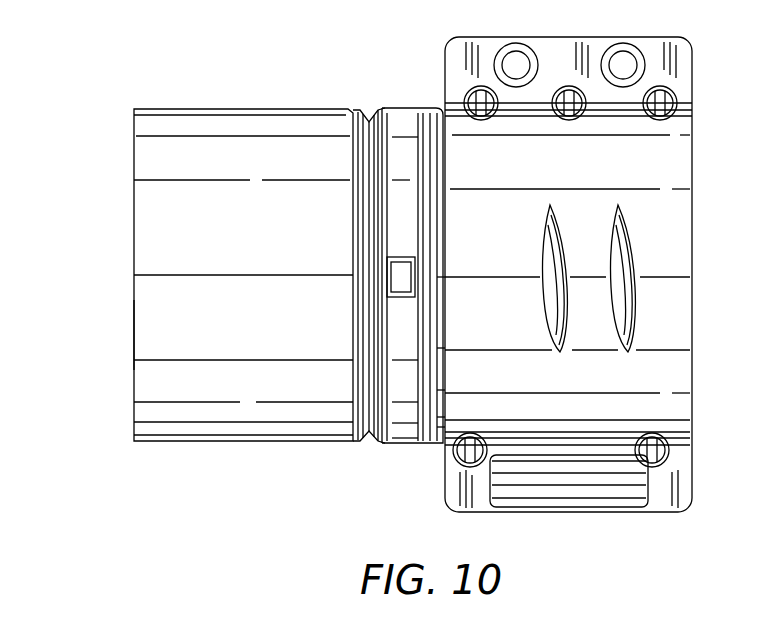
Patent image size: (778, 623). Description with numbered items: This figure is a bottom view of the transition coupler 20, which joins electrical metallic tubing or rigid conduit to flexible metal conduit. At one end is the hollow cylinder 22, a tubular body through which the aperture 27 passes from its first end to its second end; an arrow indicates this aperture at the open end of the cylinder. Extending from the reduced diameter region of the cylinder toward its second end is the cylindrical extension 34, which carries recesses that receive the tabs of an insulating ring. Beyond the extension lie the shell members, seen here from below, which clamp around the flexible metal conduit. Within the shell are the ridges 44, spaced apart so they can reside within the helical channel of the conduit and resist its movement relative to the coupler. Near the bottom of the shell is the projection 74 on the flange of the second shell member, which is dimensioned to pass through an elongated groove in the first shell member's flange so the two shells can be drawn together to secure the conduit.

The transition coupler 20 is at (329, 88).
The hollow cylinder 22 is at (270, 407).
The aperture 27 is at (132, 337).
The cylindrical extension 34 is at (369, 118).
The ridges 44 is at (622, 262).
The projection 74 is at (632, 490).